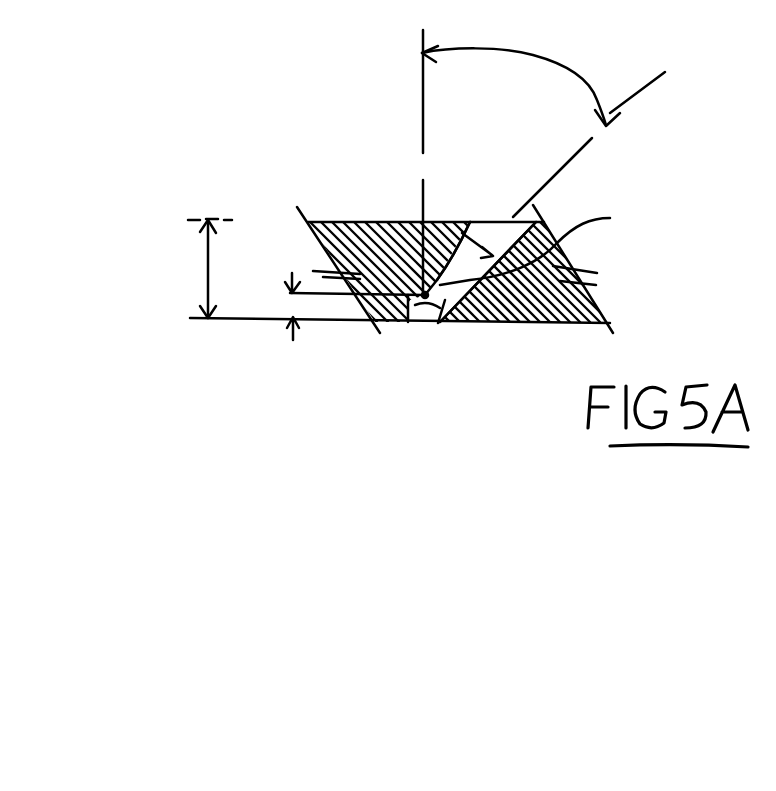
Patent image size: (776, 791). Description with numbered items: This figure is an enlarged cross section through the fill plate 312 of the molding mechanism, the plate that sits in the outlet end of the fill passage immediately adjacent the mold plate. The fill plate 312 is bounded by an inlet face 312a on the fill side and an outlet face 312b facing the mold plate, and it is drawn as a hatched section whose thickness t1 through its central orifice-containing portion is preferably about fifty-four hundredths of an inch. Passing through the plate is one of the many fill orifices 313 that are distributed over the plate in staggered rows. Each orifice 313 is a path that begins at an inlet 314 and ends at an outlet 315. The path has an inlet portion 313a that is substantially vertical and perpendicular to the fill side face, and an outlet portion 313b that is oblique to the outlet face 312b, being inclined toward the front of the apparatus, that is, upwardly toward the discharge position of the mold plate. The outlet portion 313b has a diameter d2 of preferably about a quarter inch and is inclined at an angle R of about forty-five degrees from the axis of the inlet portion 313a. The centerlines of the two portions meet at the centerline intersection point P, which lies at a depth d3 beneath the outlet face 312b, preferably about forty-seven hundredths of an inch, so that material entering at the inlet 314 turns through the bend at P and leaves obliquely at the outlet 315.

The fill plate 312 is at (607, 297).
The inlet face 312a is at (565, 330).
The outlet face 312b is at (338, 217).
The fill orifice 313 is at (504, 211).
The inlet portion 313a is at (427, 320).
The outlet portion 313b is at (463, 257).
The inlet 314 is at (415, 318).
The outlet 315 is at (560, 168).
The centerline intersection point P is at (541, 241).
The angle R is at (521, 156).
The thickness t1 is at (195, 268).
The diameter of the outlet portion d2 is at (480, 220).
The depth d3 is at (334, 306).